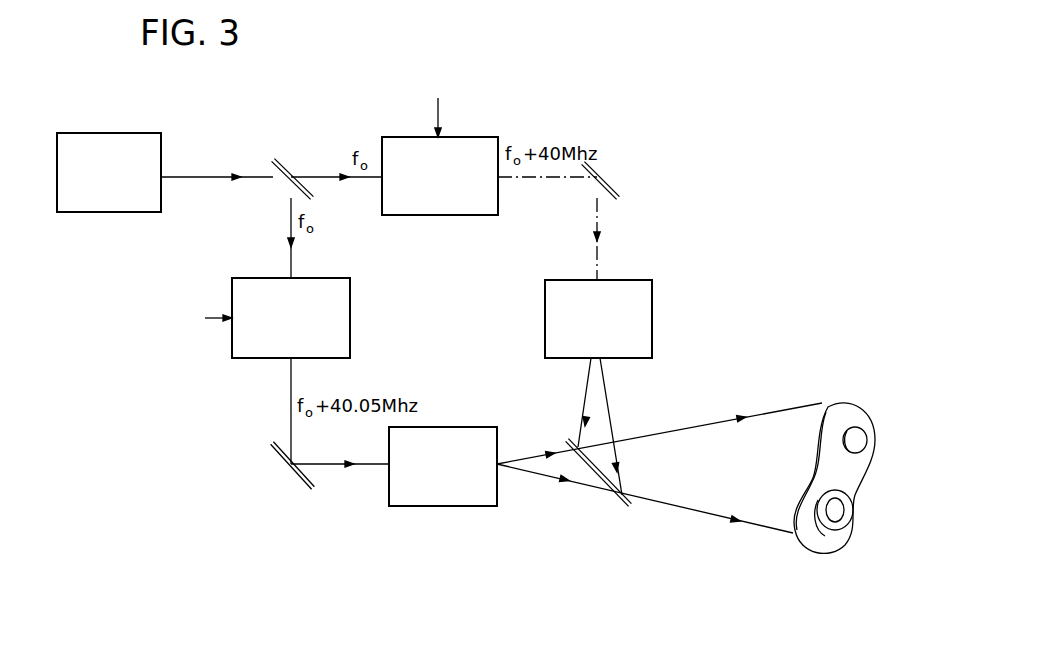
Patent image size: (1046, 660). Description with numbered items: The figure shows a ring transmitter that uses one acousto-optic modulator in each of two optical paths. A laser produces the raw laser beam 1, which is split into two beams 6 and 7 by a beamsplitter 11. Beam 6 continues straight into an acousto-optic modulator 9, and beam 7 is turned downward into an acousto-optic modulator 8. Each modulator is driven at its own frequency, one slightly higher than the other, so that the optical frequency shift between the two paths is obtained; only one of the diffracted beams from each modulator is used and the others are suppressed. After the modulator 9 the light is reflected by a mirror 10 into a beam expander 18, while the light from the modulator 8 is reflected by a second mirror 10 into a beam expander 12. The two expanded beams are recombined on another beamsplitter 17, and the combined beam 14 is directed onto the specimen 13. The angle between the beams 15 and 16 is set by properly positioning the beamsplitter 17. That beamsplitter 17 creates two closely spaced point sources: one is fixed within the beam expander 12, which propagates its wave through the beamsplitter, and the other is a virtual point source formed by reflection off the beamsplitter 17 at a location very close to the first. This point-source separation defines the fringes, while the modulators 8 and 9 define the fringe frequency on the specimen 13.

The raw laser beam 1 is at (180, 177).
The beam 6 is at (368, 180).
The beam 7 is at (291, 262).
The acousto-optic modulator 8 is at (350, 318).
The acousto-optic modulator 9 is at (445, 215).
The mirror 10 is at (600, 172).
The beamsplitter 11 is at (290, 162).
The beam expander 12 is at (455, 506).
The specimen 13 is at (862, 408).
The combined beam 14 is at (650, 498).
The beam 15 is at (594, 390).
The beam 16 is at (522, 466).
The beamsplitter 17 is at (592, 474).
The beam expander 18 is at (652, 310).